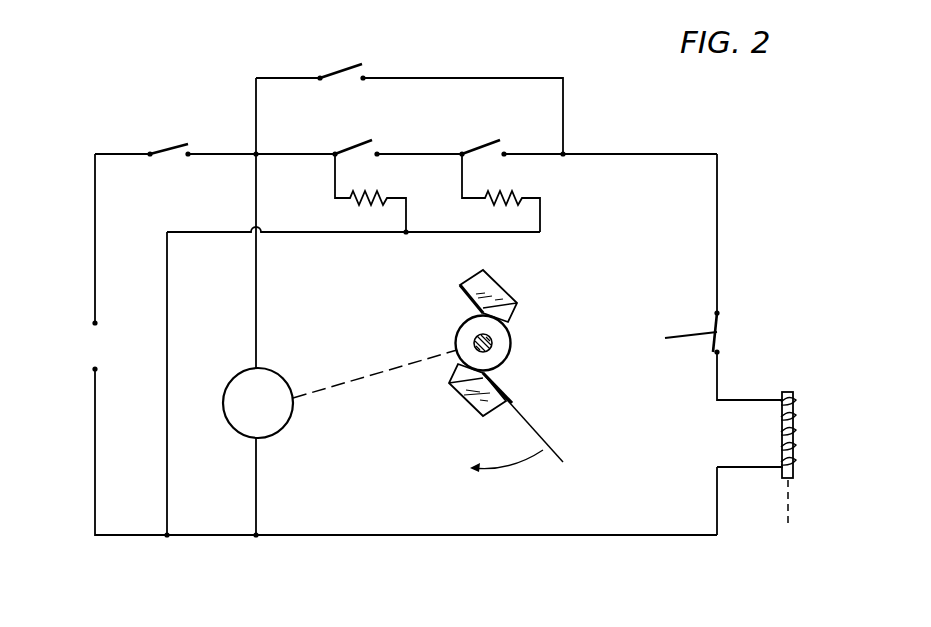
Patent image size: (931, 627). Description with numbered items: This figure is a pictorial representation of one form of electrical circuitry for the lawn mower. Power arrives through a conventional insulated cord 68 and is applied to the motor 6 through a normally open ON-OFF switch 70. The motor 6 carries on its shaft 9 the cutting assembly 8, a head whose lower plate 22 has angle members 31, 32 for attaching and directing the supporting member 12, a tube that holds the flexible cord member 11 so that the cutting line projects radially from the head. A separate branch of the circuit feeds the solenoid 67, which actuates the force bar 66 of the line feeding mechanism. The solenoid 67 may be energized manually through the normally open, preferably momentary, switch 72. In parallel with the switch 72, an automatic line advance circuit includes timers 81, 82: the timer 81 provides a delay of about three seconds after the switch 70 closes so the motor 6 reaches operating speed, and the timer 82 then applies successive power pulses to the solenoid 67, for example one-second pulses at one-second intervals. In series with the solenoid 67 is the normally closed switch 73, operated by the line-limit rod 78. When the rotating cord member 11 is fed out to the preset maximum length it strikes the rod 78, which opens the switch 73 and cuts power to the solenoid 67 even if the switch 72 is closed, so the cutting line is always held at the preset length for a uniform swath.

The motor 6 is at (232, 424).
The cutting assembly 8 is at (563, 363).
The shaft 9 is at (475, 332).
The cord member 11 is at (562, 455).
The supporting member 12 is at (508, 398).
The lower plate 22 is at (512, 342).
The angle member 31 is at (468, 403).
The angle member 32 is at (512, 297).
The force bar 66 is at (792, 506).
The solenoid 67 is at (805, 416).
The cord 68 is at (74, 379).
The ON-OFF switch 70 is at (168, 143).
The ON-OFF switch 72 is at (360, 66).
The normally closed switch 73 is at (721, 322).
The rod 78 is at (675, 338).
The timer 81 is at (360, 140).
The timer 82 is at (490, 140).